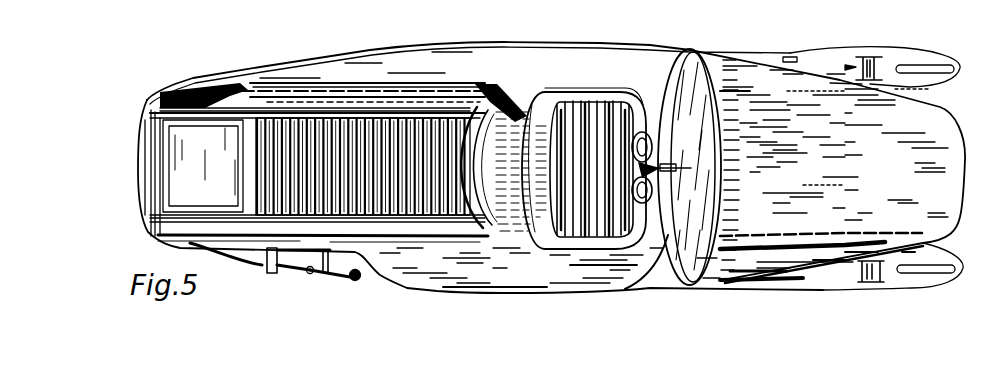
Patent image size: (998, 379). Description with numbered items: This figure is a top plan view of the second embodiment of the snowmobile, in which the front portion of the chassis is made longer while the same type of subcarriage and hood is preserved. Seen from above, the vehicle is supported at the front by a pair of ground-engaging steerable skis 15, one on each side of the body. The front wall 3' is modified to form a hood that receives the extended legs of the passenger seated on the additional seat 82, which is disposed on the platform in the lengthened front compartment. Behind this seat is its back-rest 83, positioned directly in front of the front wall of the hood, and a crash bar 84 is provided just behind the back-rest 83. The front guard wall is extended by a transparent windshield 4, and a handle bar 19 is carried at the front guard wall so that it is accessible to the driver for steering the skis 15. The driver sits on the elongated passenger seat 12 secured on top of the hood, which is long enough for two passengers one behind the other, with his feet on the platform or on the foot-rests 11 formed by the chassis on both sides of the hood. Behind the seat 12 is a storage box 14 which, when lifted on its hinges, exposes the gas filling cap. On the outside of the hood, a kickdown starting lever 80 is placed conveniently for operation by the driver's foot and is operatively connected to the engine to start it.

The front wall 3' is at (558, 162).
The transparent windshield 4 is at (687, 63).
The foot-rests 11 is at (390, 63).
The passenger seat 12 is at (357, 133).
The storage box 14 is at (185, 137).
The ski 15 is at (900, 57).
The handle bar 19 is at (640, 135).
The kickdown starting lever 80 is at (310, 272).
The additional seat 82 is at (588, 103).
The back-rest 83 is at (545, 90).
The crash bar 84 is at (510, 100).